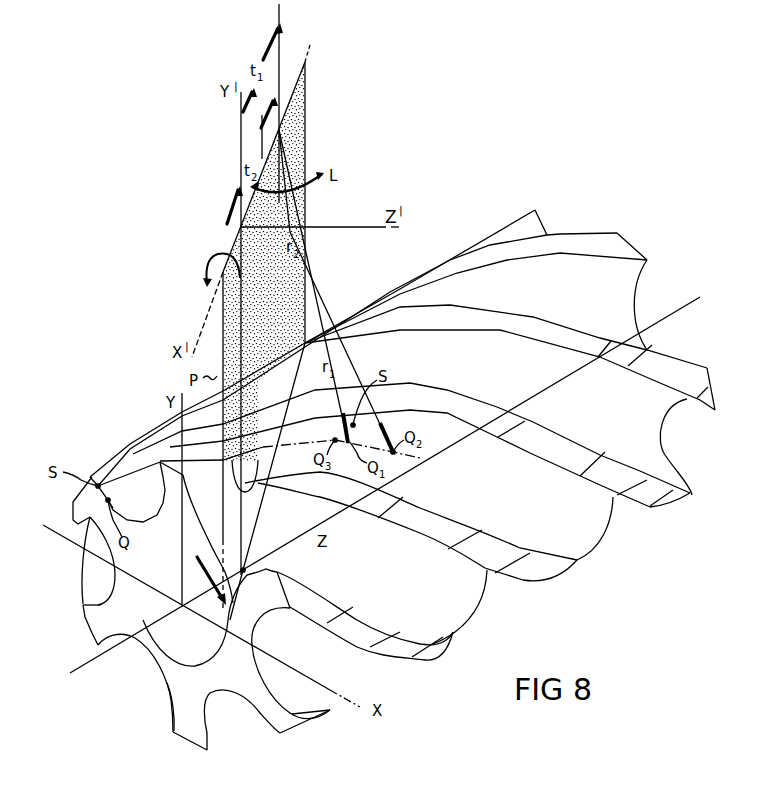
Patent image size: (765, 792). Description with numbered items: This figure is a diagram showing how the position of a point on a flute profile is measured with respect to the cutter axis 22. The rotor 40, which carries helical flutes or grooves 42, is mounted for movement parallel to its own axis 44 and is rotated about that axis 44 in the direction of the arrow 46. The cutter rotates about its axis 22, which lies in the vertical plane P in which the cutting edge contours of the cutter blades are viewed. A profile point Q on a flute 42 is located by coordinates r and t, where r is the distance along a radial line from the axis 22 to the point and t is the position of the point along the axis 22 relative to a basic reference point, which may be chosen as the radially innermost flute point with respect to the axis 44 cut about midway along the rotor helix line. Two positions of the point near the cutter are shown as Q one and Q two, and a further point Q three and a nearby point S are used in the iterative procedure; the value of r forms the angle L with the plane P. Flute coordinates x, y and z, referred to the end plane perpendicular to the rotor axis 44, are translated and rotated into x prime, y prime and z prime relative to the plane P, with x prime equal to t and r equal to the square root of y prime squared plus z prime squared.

The cutter axis 22 is at (202, 318).
The rotor 40 is at (292, 736).
The helical flutes or grooves 42 is at (153, 492).
The rotor axis 44 is at (92, 660).
The arrow indicating rotor rotation 46 is at (220, 658).